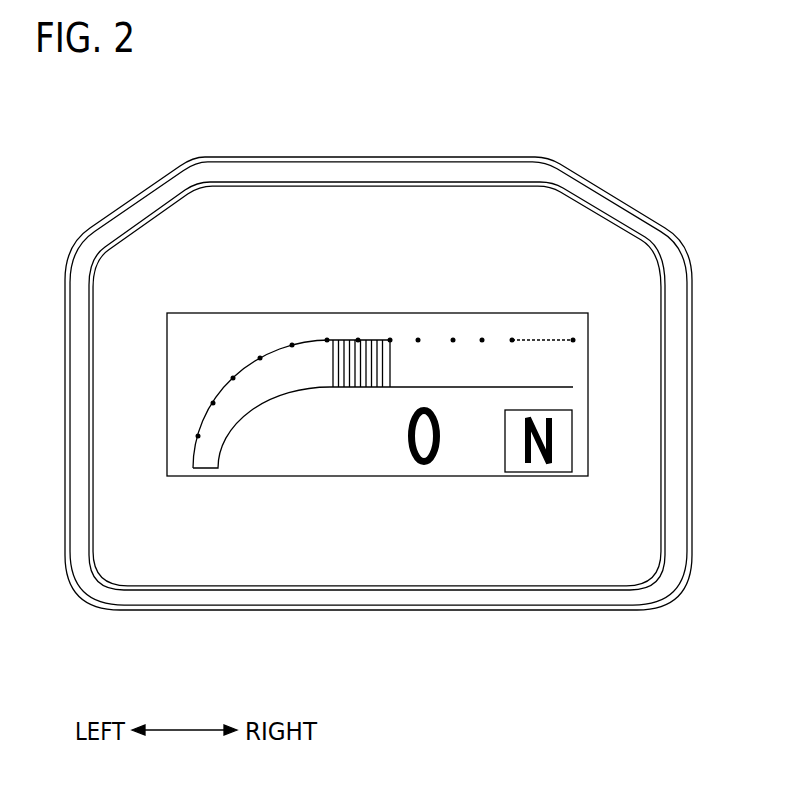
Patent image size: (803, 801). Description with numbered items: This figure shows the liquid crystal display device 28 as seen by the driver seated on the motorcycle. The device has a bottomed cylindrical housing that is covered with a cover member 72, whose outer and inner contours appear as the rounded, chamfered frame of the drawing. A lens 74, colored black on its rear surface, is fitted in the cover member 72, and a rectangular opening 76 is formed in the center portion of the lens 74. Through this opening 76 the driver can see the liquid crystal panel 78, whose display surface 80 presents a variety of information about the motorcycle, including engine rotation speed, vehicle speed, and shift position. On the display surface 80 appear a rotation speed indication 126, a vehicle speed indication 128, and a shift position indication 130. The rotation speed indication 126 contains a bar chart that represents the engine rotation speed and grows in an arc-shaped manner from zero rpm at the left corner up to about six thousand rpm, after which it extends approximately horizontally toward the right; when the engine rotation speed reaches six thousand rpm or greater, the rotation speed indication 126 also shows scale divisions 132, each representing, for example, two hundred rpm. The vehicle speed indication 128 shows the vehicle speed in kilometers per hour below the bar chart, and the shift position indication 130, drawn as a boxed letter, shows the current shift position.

The liquid crystal display device 28 is at (398, 403).
The cover member 72 is at (298, 595).
The lens 74 is at (635, 525).
The rectangular opening 76 is at (377, 475).
The liquid crystal panel 78 is at (407, 395).
The display surface 80 is at (377, 366).
The rotation speed indication 126 is at (280, 348).
The vehicle speed indication 128 is at (397, 428).
The shift position indication 130 is at (573, 438).
The scale divisions 132 is at (384, 368).